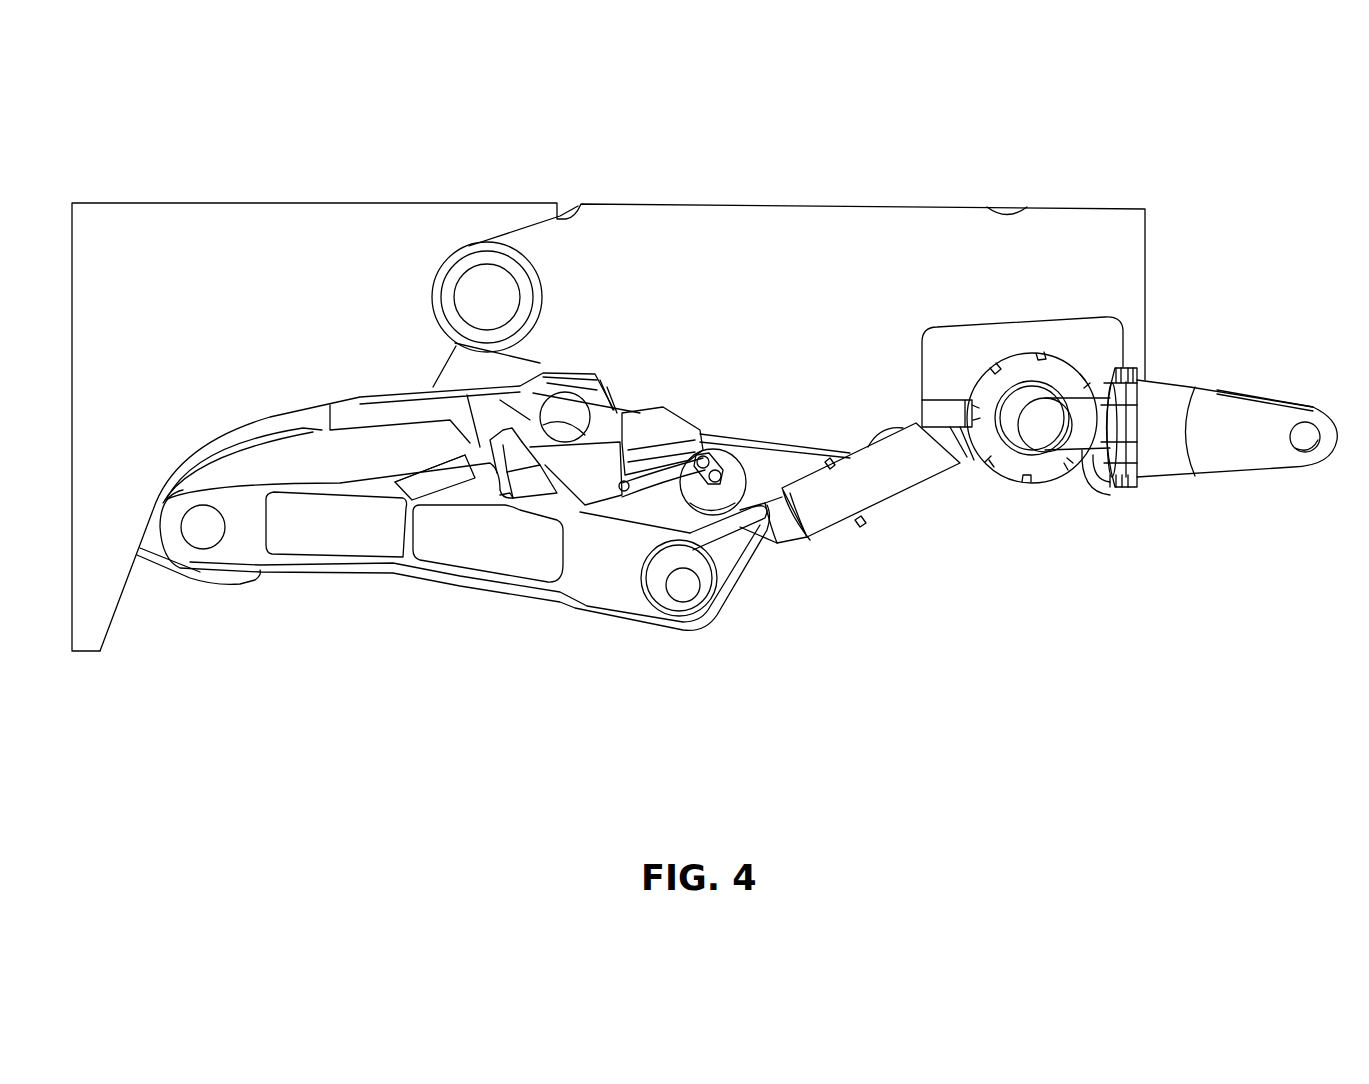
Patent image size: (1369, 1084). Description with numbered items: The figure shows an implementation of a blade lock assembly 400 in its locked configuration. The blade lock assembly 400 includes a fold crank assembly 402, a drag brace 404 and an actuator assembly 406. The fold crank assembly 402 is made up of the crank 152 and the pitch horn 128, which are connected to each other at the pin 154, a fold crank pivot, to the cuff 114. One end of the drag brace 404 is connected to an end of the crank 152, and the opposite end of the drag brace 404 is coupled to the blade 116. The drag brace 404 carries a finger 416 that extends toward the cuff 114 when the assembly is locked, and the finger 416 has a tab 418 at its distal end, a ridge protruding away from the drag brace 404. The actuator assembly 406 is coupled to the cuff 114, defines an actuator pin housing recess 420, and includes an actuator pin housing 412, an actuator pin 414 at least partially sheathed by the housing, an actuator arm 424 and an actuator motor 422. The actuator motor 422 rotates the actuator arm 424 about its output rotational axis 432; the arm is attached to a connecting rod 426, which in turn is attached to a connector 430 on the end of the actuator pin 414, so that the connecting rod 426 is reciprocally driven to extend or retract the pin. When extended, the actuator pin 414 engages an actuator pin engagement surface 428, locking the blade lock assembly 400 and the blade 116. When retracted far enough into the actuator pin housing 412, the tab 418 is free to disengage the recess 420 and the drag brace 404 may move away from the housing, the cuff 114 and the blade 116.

The cuff 114 is at (517, 240).
The blade 116 is at (95, 592).
The pitch horn 128 is at (1133, 498).
The crank 152 is at (862, 490).
The pin 154 is at (1033, 412).
The blade lock assembly 400 is at (905, 652).
The fold crank assembly 402 is at (1175, 295).
The drag brace 404 is at (400, 573).
The actuator assembly 406 is at (510, 510).
The actuator pin housing 412 is at (607, 403).
The actuator pin 414 is at (630, 455).
The finger 416 is at (423, 467).
The tab 418 is at (503, 450).
The actuator pin housing recess 420 is at (526, 434).
The actuator motor 422 is at (710, 560).
The actuator arm 424 is at (714, 467).
The connecting rod 426 is at (656, 470).
The actuator pin engagement surface 428 is at (470, 515).
The connector 430 is at (655, 470).
The output rotational axis 432 is at (784, 547).